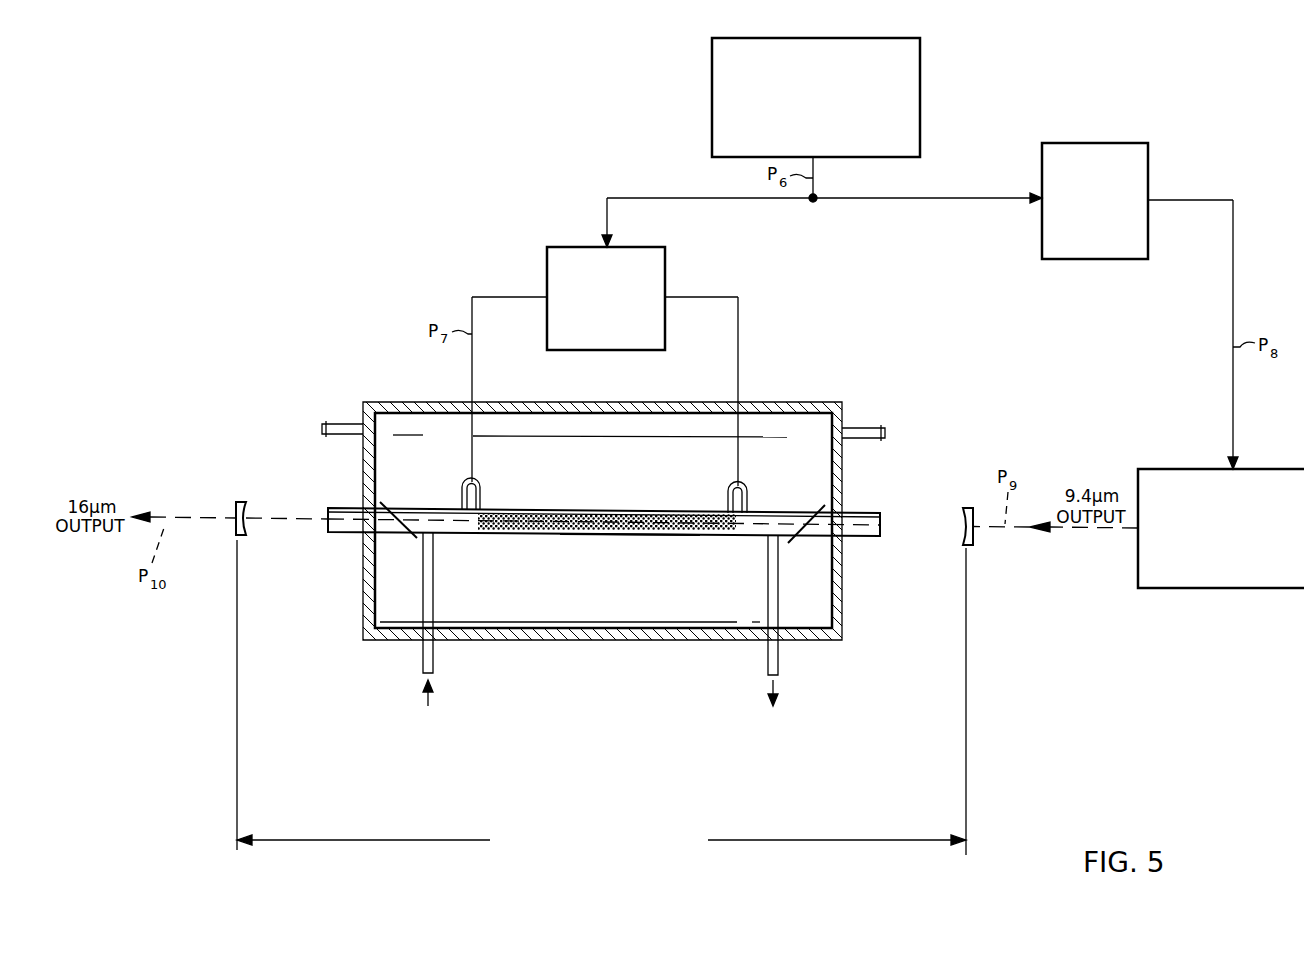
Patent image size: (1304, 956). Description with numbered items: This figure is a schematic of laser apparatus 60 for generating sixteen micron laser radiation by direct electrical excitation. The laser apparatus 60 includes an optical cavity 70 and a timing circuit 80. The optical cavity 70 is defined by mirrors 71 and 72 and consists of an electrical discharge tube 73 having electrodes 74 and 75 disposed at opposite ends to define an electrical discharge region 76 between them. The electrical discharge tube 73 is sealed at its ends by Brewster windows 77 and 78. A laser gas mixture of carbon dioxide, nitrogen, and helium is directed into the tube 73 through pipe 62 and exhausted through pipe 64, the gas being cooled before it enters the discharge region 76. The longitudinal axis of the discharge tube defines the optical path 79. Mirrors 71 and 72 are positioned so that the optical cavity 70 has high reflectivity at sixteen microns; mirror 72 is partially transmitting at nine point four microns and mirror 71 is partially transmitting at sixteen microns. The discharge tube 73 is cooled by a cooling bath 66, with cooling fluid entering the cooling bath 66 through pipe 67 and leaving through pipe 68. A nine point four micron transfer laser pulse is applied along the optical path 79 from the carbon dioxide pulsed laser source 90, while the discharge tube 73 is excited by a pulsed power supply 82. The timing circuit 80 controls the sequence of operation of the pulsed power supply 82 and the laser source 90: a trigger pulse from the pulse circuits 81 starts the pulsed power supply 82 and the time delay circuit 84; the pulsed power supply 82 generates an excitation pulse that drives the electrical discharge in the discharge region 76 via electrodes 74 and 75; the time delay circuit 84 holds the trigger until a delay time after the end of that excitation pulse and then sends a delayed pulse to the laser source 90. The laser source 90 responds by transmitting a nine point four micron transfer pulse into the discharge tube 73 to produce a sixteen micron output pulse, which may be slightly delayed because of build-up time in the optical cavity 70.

The laser apparatus 60 is at (285, 673).
The pipe 62 is at (433, 657).
The pipe 64 is at (778, 660).
The cooling bath 66 is at (633, 432).
The pipe 67 is at (338, 424).
The pipe 68 is at (863, 428).
The optical cavity 70 is at (604, 527).
The mirror 71 is at (232, 538).
The mirror 72 is at (975, 540).
The electrical discharge tube 73 is at (491, 507).
The electrode 74 is at (460, 490).
The electrode 75 is at (748, 494).
The electrical discharge region 76 is at (633, 537).
The Brewster window 77 is at (356, 538).
The Brewster window 78 is at (815, 504).
The optical path 79 is at (765, 526).
The timing circuit 80 is at (831, 253).
The pulse circuits 81 is at (920, 84).
The pulsed power supply 82 is at (665, 268).
The time delay circuit 84 is at (1112, 143).
The 9.4 μm CO2 pulsed laser source 90 is at (1176, 588).